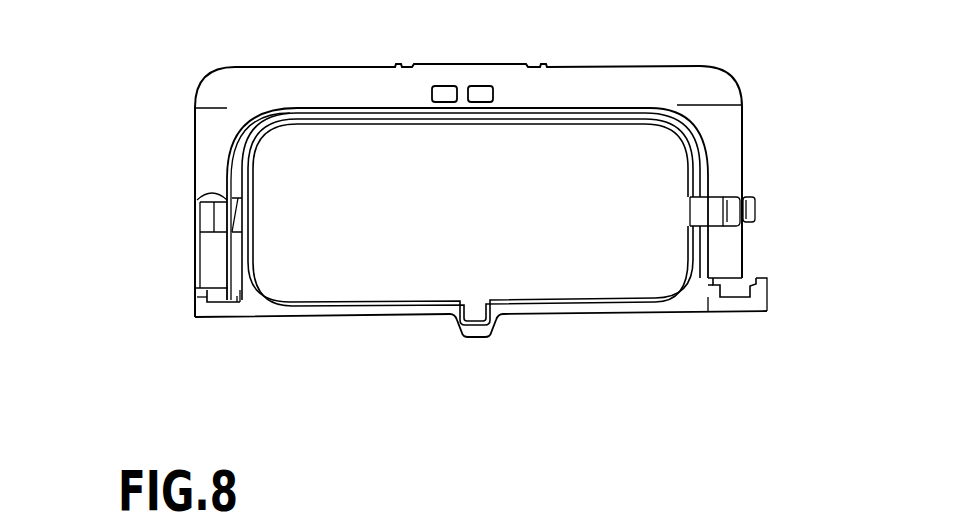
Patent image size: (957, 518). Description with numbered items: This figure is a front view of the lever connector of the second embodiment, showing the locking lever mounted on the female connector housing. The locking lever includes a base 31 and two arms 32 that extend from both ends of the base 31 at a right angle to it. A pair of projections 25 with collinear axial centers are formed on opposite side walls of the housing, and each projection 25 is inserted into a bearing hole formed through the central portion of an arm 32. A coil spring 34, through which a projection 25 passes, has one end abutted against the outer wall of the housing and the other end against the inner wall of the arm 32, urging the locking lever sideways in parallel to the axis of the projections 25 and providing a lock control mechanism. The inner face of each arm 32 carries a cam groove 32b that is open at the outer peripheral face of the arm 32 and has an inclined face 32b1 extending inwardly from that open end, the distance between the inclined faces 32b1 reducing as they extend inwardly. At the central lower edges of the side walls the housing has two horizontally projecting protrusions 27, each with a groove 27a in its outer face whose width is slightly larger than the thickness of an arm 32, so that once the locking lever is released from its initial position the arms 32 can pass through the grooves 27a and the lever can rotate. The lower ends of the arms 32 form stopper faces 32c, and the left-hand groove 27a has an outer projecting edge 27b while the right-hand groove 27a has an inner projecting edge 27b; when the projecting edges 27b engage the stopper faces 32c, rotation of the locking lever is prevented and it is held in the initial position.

The base 31 is at (607, 80).
The arm 32 is at (196, 143).
The coil spring 34 is at (203, 193).
The cam groove 32b is at (234, 240).
The inclined face 32b1 is at (212, 224).
The projection 25 is at (755, 197).
The stopper face 32c is at (217, 312).
The projecting edge 27b is at (197, 298).
The groove 27a is at (245, 318).
The protrusion 27 is at (236, 318).